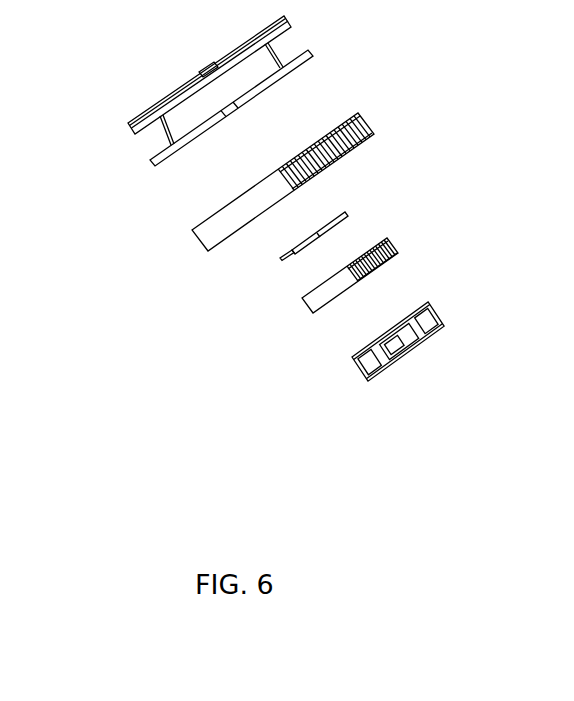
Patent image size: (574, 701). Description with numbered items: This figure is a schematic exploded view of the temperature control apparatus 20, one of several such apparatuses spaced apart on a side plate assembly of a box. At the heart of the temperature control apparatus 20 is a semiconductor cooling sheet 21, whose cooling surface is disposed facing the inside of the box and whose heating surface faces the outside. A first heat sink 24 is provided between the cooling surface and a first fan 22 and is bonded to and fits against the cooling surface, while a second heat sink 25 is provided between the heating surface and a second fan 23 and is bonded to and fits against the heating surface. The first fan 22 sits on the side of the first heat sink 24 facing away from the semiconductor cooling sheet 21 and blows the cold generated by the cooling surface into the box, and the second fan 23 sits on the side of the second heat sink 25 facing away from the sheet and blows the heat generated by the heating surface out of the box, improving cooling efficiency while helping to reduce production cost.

The temperature control apparatus 20 is at (73, 26).
The semiconductor cooling sheet 21 is at (295, 253).
The first fan 22 is at (377, 362).
The second fan 23 is at (171, 132).
The first heat sink 24 is at (336, 296).
The second heat sink 25 is at (230, 220).